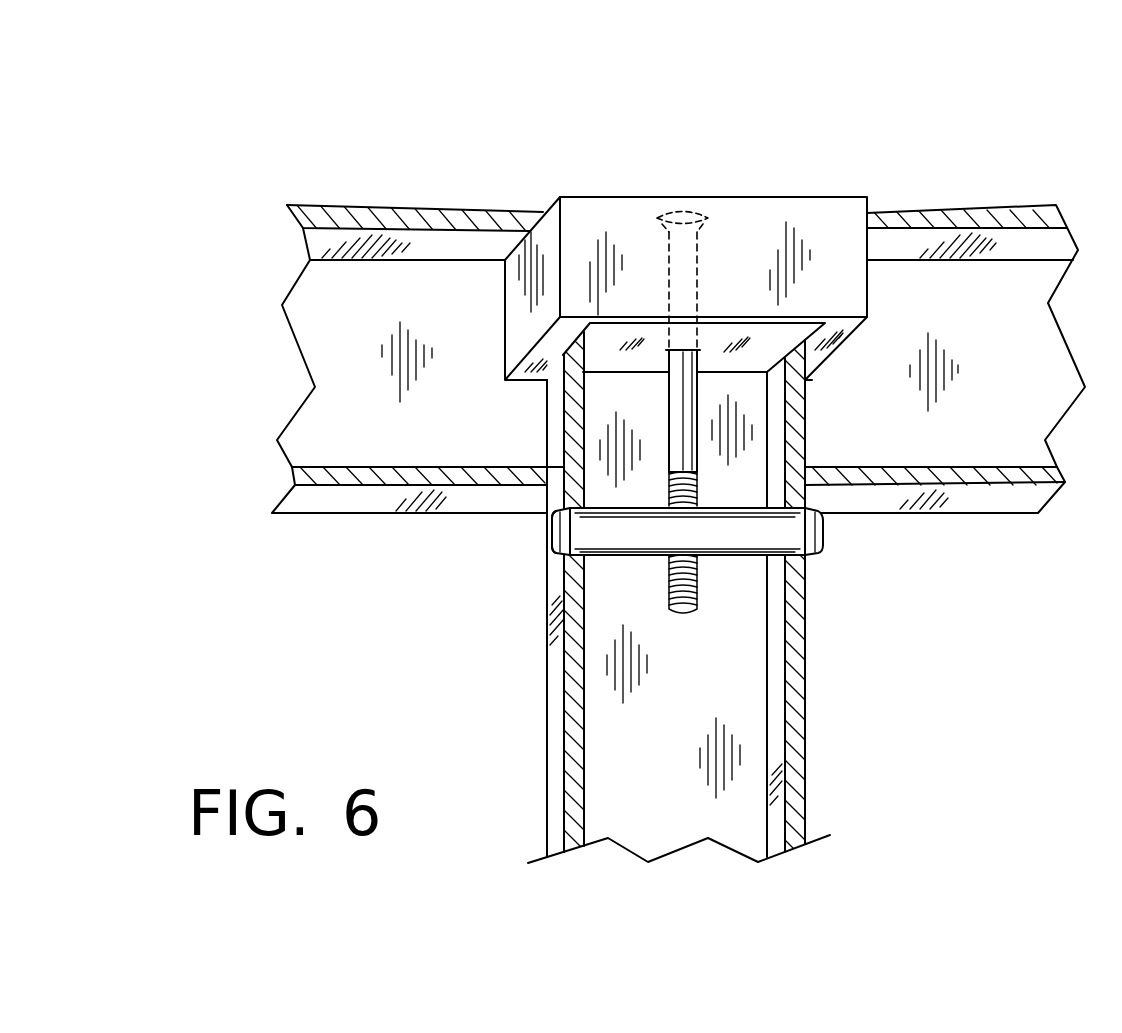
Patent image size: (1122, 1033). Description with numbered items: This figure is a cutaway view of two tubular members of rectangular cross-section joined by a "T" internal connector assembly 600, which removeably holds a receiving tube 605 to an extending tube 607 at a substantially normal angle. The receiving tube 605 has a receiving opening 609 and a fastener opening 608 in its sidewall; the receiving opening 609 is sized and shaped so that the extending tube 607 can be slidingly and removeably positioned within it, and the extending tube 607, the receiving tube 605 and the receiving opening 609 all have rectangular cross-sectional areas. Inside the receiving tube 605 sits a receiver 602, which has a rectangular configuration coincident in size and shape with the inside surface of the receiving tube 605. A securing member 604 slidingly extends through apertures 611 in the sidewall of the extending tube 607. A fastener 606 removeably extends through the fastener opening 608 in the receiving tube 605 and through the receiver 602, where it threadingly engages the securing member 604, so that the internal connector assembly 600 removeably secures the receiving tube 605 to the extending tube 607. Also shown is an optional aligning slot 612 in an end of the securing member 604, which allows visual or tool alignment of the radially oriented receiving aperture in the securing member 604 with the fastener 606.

The internal connector assembly 600 is at (877, 145).
The receiver 602 is at (588, 210).
The securing member 604 is at (798, 528).
The receiving tube 605 is at (993, 213).
The fastener 606 is at (692, 275).
The extending tube 607 is at (798, 802).
The fastener opening 608 is at (652, 215).
The receiving opening 609 is at (547, 487).
The apertures 611 is at (576, 565).
The aligning slot 612 is at (547, 538).